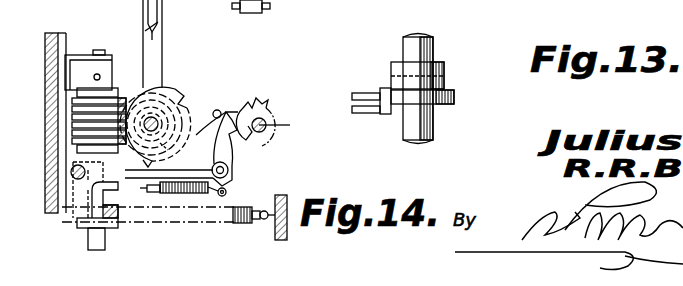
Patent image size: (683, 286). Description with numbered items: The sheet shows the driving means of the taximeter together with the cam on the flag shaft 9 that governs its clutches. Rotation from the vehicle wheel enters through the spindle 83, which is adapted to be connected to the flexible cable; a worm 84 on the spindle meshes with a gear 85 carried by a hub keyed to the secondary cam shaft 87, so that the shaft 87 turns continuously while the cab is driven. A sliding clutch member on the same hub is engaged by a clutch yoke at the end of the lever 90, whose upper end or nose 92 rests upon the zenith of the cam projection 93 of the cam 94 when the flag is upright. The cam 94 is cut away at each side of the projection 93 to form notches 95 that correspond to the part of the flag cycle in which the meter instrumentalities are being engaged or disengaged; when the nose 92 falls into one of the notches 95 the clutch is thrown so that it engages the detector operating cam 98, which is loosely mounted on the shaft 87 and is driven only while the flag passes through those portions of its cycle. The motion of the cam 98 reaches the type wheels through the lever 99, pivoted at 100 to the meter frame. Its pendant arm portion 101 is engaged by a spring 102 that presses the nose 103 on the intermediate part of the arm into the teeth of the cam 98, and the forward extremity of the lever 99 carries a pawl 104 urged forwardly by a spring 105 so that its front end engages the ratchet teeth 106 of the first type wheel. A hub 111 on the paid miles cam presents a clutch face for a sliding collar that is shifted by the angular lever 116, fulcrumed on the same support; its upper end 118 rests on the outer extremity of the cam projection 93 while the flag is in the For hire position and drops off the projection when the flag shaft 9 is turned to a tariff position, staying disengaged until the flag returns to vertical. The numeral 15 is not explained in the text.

In FIG. 13, the flag shaft 9 is at (436, 118).
In FIG. 14, the ratchet shaft 15 is at (291, 120).
In FIG. 14, the spindle 83 is at (233, 7).
In FIG. 14, the worm 84 is at (78, 88).
In FIG. 14, the gear 85 is at (180, 116).
In FIG. 14, the secondary cam shaft 87 is at (158, 125).
In FIG. 14, the lever 90 is at (142, 18).
In FIG. 13, the upper end of lever 92 is at (364, 92).
In FIG. 13, the cam projection 93 is at (388, 116).
In FIG. 13, the cam 94 is at (447, 95).
In FIG. 13, the cut away portions 95 is at (408, 86).
In FIG. 14, the detector operating cam 98 is at (172, 92).
In FIG. 14, the lever 99 is at (130, 184).
In FIG. 14, the pivot 100 is at (84, 178).
In FIG. 14, the pendant arm portion 101 is at (92, 232).
In FIG. 14, the spring 102 is at (240, 224).
In FIG. 14, the nose 103 is at (165, 197).
In FIG. 14, the pawl 104 is at (225, 148).
In FIG. 14, the spring 105 is at (233, 178).
In FIG. 14, the ratchet teeth 106 is at (268, 100).
In FIG. 14, the hub 111 is at (350, 0).
In FIG. 14, the angular lever 116 is at (163, 26).
In FIG. 13, the upper end of angular lever 118 is at (366, 114).